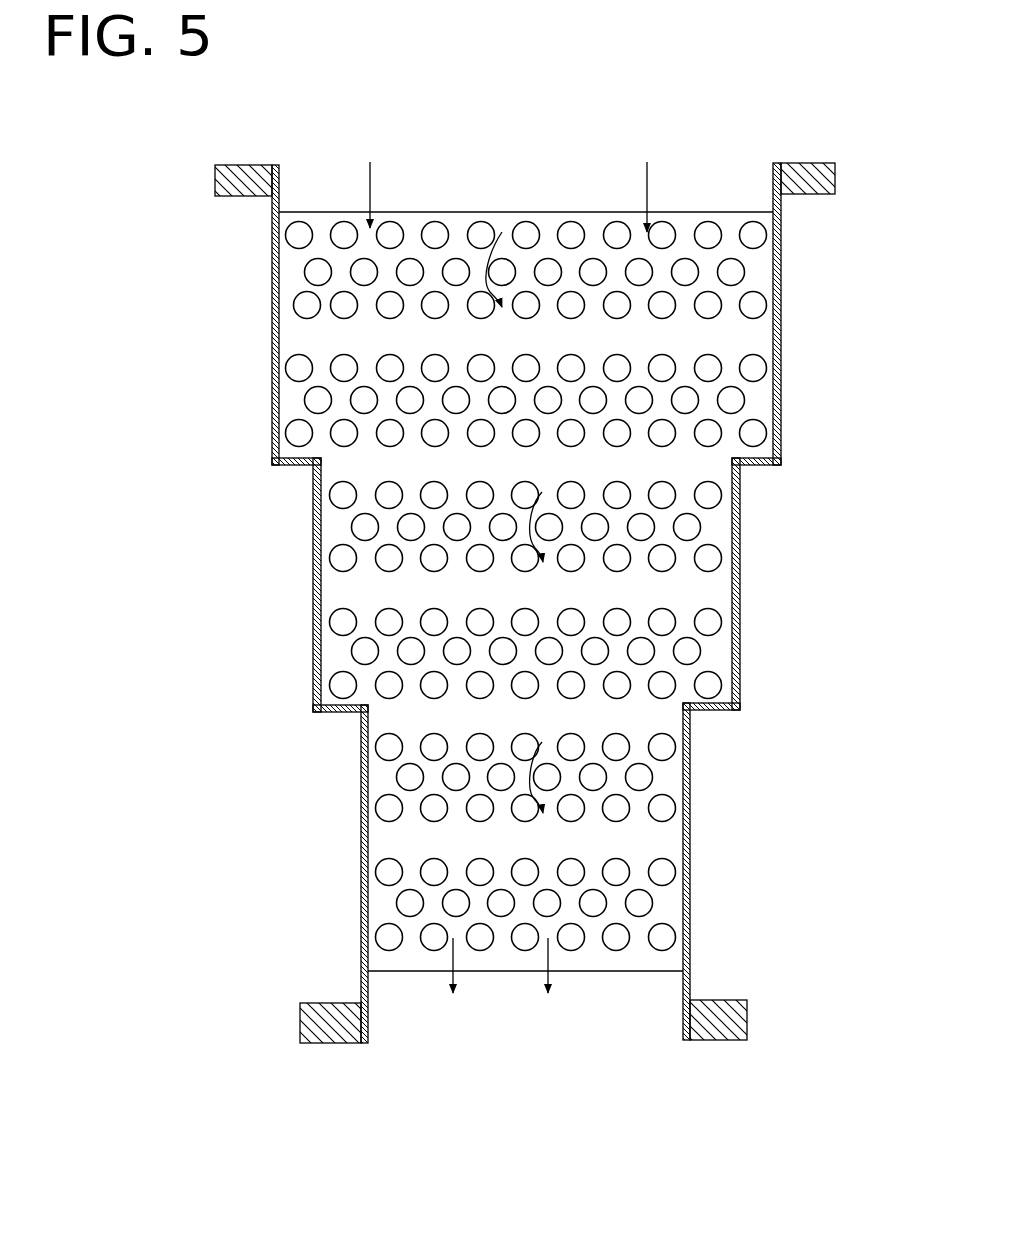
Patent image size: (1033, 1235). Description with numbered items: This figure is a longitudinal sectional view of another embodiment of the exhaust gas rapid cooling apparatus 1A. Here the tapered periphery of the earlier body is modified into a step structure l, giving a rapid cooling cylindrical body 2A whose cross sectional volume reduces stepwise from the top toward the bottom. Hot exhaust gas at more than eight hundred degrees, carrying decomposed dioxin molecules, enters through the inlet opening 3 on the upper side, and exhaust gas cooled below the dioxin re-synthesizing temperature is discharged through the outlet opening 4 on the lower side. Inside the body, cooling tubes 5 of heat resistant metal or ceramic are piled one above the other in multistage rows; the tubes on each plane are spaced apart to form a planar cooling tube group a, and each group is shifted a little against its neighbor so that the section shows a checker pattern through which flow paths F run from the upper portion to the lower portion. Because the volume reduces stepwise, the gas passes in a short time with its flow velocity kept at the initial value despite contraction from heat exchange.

The exhaust gas rapid cooling apparatus 1A is at (810, 162).
The rapid cooling cylindrical body 2A is at (739, 568).
The inlet opening 3 is at (683, 190).
The outlet opening 4 is at (622, 1012).
The cooling tubes 5 is at (563, 526).
The planar cooling tube group a is at (323, 270).
The step structure l is at (313, 502).
The flow paths F is at (521, 538).